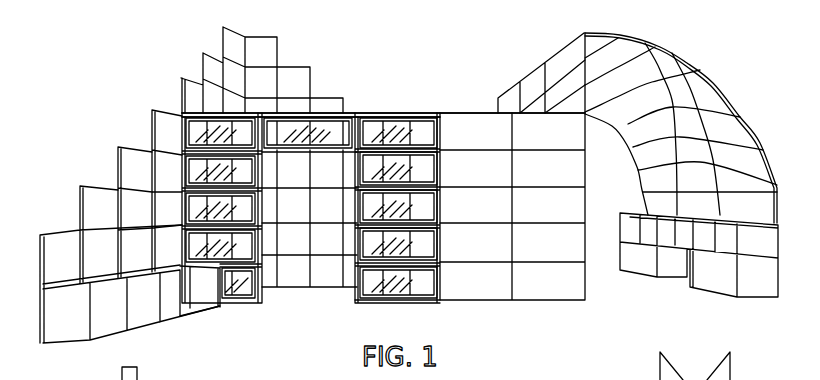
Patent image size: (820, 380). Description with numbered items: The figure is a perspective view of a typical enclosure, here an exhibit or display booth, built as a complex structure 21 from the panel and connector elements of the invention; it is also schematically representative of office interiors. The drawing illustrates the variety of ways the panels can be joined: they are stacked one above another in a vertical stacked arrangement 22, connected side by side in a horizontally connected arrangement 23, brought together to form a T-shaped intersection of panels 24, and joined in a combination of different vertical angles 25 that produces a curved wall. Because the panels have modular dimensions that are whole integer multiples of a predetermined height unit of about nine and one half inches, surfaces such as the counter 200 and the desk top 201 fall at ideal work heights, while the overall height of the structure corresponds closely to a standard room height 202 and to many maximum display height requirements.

The complex structure 21 is at (145, 106).
The vertical stacked arrangement 22 is at (132, 196).
The horizontally connected arrangement 23 is at (540, 75).
The T-shaped intersection of panels 24 is at (68, 300).
The combination of different vertical angles 25 is at (710, 82).
The counter 200 is at (643, 213).
The desk top 201 is at (183, 272).
The room height 202 is at (467, 112).